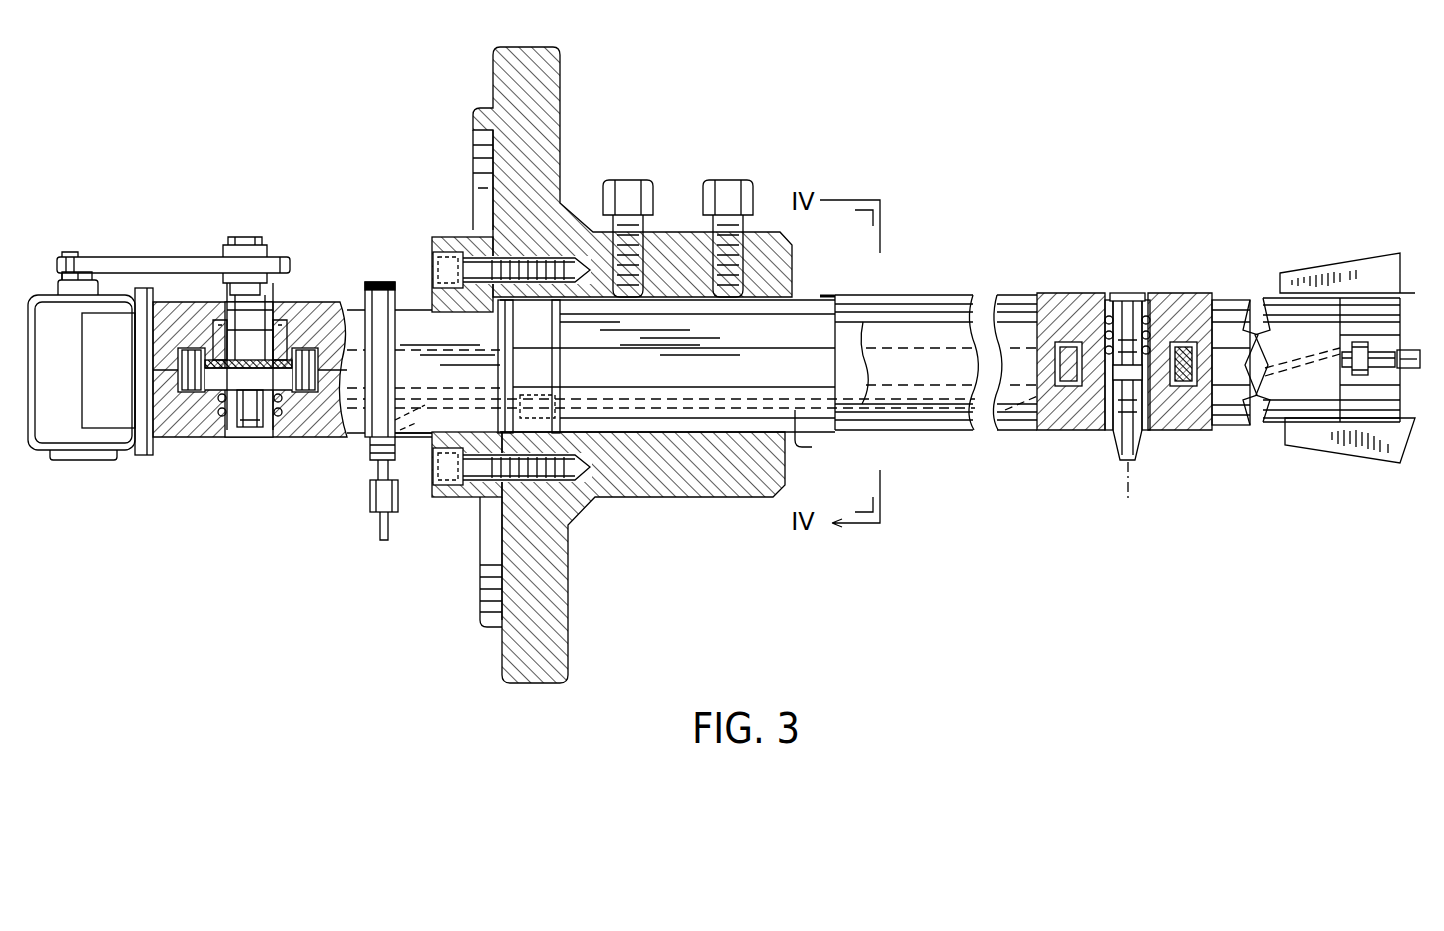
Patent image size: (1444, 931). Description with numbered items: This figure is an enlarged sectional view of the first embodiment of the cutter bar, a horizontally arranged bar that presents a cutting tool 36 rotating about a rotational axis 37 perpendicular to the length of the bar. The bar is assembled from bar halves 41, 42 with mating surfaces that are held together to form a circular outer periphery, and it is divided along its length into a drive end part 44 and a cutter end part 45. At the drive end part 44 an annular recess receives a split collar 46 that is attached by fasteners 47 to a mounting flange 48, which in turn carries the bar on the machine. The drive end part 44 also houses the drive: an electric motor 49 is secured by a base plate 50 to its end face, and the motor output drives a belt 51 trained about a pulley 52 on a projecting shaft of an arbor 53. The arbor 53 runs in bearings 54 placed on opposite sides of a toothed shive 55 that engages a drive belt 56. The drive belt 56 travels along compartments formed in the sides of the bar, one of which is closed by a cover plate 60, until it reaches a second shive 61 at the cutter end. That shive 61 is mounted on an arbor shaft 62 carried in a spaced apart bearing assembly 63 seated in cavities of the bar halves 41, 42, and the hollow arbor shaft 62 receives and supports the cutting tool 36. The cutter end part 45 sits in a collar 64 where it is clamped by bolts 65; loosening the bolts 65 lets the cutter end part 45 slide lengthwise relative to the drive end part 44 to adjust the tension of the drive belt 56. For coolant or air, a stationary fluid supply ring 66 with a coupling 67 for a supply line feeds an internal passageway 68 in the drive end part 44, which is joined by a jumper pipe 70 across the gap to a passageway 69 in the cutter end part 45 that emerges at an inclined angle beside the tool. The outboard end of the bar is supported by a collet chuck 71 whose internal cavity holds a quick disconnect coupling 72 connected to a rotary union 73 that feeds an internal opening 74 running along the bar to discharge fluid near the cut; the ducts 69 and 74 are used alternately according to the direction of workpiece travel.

The cutting tool 36 is at (1138, 450).
The rotational axis 37 is at (1133, 485).
The bar half 41 is at (918, 298).
The bar half 42 is at (935, 430).
The drive end part 44 is at (348, 293).
The cutter end part 45 is at (1051, 281).
The split collar 46 is at (455, 500).
The fasteners 47 is at (438, 255).
The mounting flange 48 is at (492, 75).
The electric motor 49 is at (85, 462).
The base plate 50 is at (148, 456).
The belt 51 is at (143, 258).
The pulley 52 is at (272, 255).
The arbor 53 is at (285, 300).
The bearings 54 is at (212, 322).
The shive 55 is at (293, 422).
The drive belt 56 is at (630, 374).
The cover plate 60 is at (950, 330).
The shive 61 is at (1182, 340).
The arbor shaft 62 is at (1095, 295).
The bearing assembly 63 is at (1092, 322).
The collar 64 is at (722, 497).
The bolts 65 is at (636, 180).
The fluid supply ring 66 is at (375, 465).
The coupling 67 is at (375, 515).
The internal passageway 68 is at (410, 440).
The internal passageway 69 is at (795, 415).
The jumper pipe 70 is at (610, 470).
The collet chuck 71 is at (1300, 450).
The quick disconnect coupling 72 is at (1395, 420).
The rotary union 73 is at (1355, 345).
The internal opening 74 is at (1275, 405).